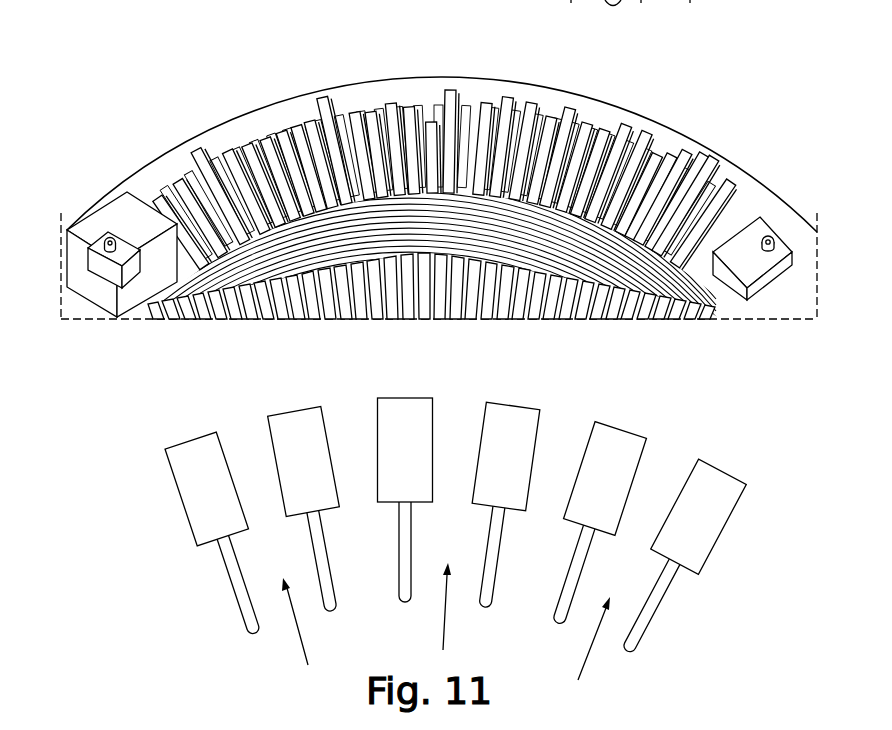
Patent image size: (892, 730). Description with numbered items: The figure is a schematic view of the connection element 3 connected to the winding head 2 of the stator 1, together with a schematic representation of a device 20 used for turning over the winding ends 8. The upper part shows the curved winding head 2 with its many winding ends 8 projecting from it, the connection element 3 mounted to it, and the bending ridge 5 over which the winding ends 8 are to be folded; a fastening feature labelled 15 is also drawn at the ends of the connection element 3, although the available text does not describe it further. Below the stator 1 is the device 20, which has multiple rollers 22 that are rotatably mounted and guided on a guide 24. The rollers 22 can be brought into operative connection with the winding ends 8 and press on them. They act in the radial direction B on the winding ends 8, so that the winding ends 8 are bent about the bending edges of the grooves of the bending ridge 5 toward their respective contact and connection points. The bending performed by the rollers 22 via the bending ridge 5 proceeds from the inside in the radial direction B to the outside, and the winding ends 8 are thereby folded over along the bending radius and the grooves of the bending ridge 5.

The stator 1 is at (685, 108).
The winding head 2 is at (68, 304).
The connection element 3 is at (135, 172).
The bending ridge 5 is at (764, 265).
The winding ends 8 is at (353, 113).
The screws 15 is at (110, 238).
The device for turning over the winding ends 20 is at (180, 561).
The rollers 22 is at (190, 452).
The guide 24 is at (247, 605).
The radial direction B is at (296, 620).